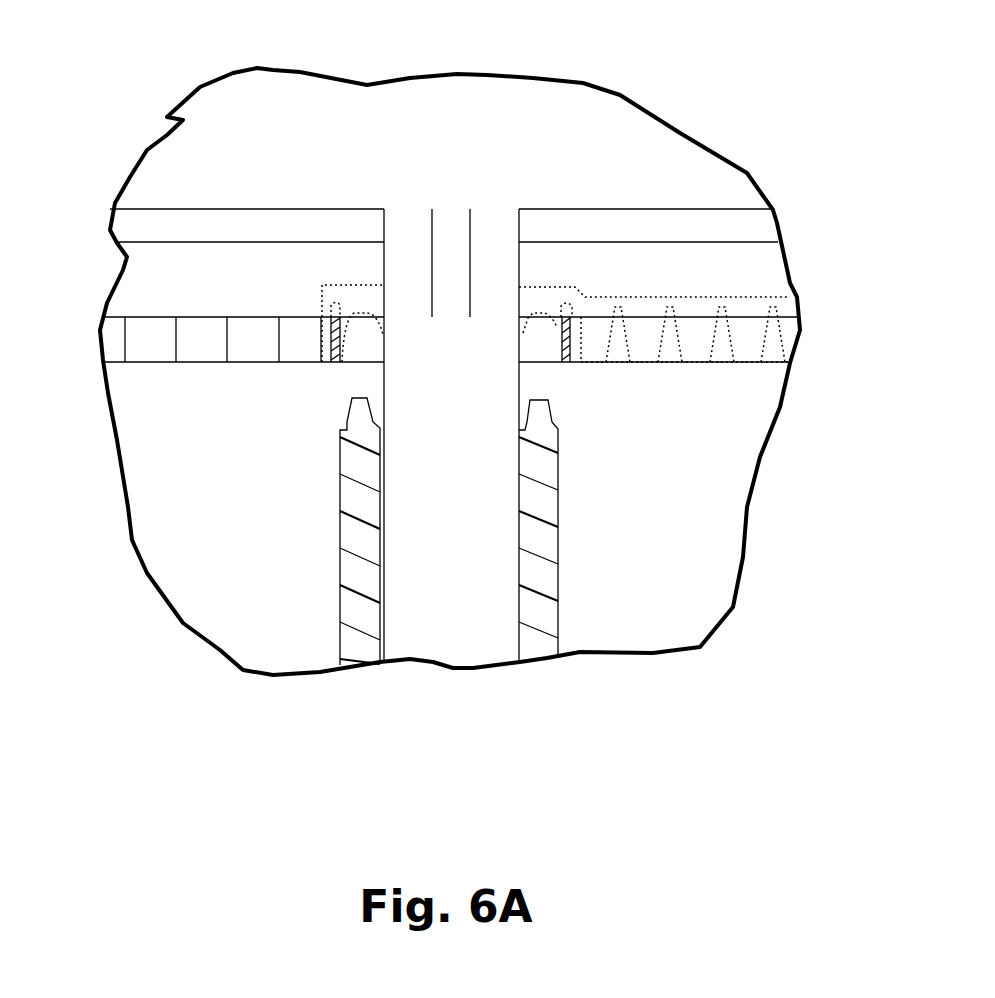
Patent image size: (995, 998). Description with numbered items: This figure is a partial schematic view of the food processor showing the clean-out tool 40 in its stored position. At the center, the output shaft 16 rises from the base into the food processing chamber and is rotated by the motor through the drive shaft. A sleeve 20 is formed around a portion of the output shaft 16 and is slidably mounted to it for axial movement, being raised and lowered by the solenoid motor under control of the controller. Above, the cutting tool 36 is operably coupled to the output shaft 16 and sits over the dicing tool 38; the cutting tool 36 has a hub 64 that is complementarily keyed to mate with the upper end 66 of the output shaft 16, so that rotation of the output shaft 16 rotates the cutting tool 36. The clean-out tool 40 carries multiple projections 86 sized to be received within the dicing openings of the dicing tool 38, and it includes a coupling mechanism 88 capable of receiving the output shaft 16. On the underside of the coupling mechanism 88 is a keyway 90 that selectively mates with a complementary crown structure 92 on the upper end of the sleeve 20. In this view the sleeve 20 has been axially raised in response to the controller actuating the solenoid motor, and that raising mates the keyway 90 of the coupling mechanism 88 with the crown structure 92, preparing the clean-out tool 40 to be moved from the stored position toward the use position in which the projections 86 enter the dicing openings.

The output shaft 16 is at (503, 640).
The sleeve 20 is at (337, 620).
The cutting tool 36 is at (175, 209).
The dicing tool 38 is at (115, 340).
The clean-out tool 40 is at (746, 365).
The hub 64 is at (385, 253).
The upper end of the output shaft 66 is at (483, 243).
The projections 86 is at (693, 367).
The coupling mechanism 88 is at (358, 284).
The keyway 90 is at (350, 363).
The crown structure 92 is at (538, 397).